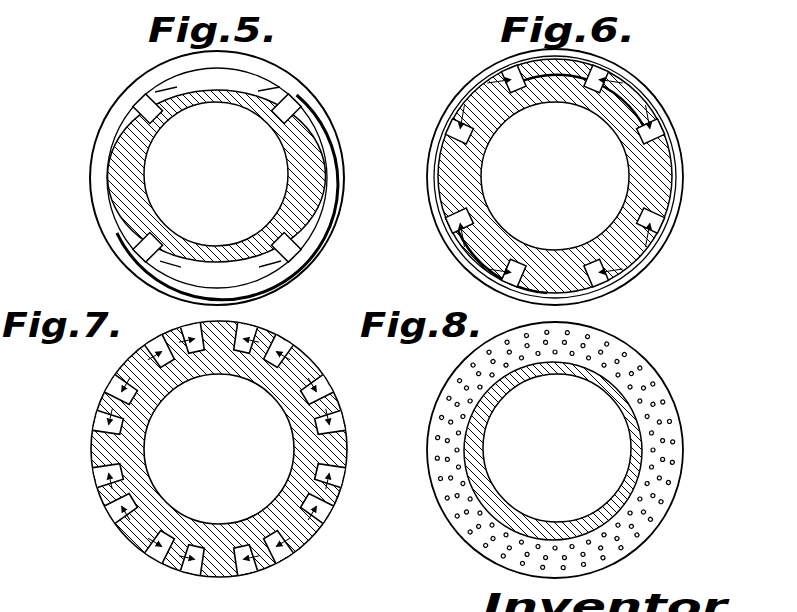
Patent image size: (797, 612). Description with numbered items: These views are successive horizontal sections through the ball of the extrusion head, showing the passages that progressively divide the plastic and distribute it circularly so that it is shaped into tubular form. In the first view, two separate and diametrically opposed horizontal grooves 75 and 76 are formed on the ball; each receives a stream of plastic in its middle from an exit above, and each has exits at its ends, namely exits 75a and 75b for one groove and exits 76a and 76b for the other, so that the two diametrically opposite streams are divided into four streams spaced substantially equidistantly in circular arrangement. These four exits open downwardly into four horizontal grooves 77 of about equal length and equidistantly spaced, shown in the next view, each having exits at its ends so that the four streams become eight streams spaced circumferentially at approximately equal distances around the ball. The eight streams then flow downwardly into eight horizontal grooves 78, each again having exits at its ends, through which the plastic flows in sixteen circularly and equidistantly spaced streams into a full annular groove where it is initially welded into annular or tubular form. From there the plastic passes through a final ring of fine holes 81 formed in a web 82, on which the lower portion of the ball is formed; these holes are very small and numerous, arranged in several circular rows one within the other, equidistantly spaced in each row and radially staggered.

In FIG. 5, the horizontal groove 75 is at (229, 266).
In FIG. 5, the exit 75a is at (152, 242).
In FIG. 5, the exit 75b is at (285, 244).
In FIG. 5, the horizontal groove 76 is at (217, 80).
In FIG. 5, the exit 76a is at (148, 97).
In FIG. 5, the exit 76b is at (290, 102).
In FIG. 6, the horizontal grooves 77 is at (481, 96).
In FIG. 7, the horizontal grooves 78 is at (323, 403).
In FIG. 8, the fine holes 81 is at (628, 389).
In FIG. 8, the web 82 is at (673, 438).